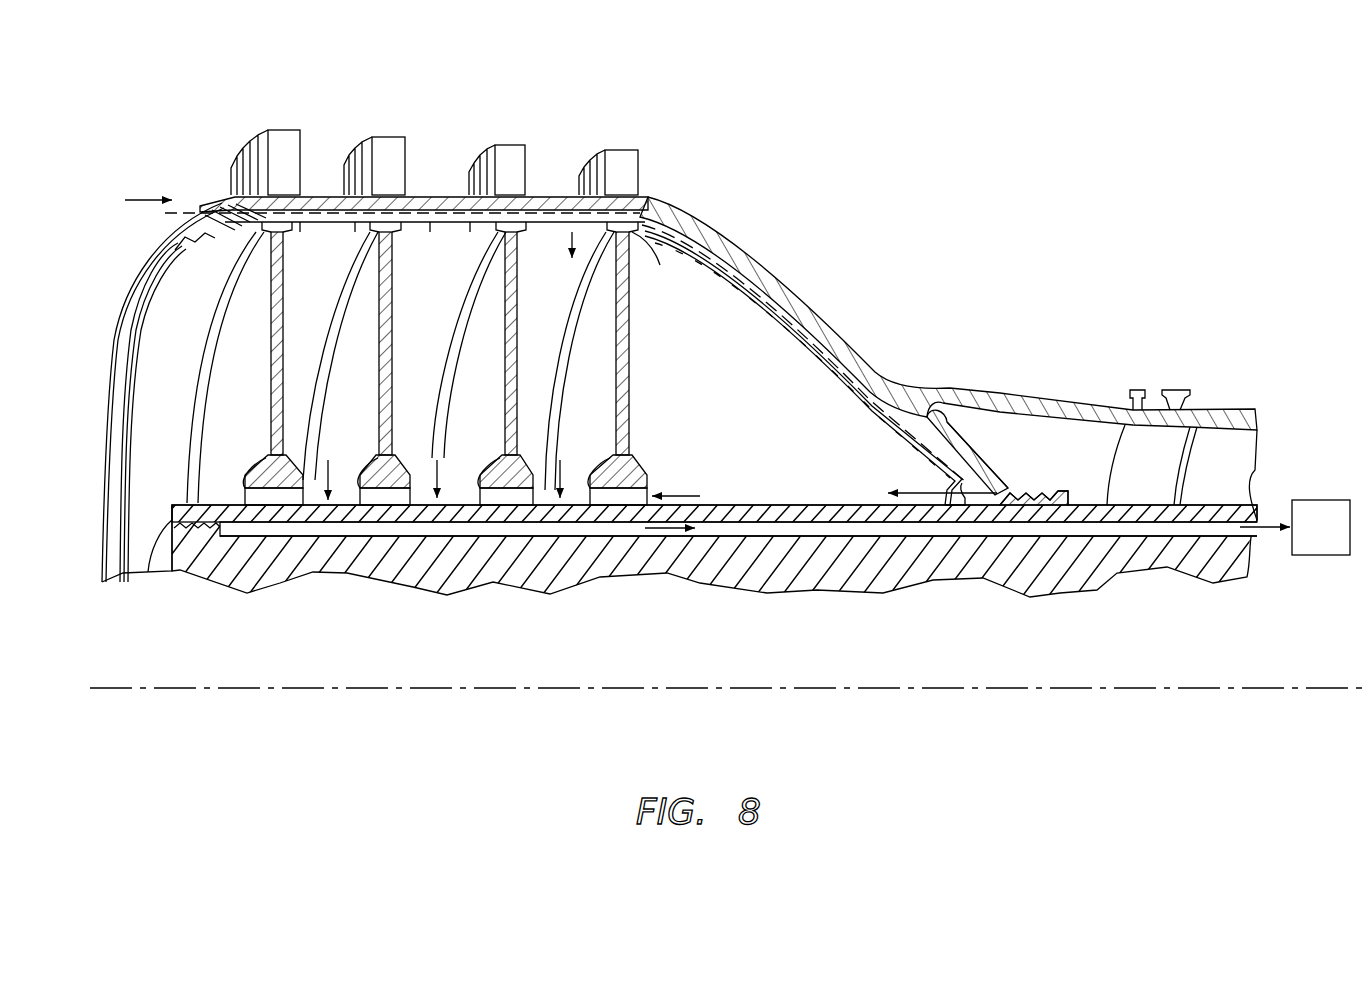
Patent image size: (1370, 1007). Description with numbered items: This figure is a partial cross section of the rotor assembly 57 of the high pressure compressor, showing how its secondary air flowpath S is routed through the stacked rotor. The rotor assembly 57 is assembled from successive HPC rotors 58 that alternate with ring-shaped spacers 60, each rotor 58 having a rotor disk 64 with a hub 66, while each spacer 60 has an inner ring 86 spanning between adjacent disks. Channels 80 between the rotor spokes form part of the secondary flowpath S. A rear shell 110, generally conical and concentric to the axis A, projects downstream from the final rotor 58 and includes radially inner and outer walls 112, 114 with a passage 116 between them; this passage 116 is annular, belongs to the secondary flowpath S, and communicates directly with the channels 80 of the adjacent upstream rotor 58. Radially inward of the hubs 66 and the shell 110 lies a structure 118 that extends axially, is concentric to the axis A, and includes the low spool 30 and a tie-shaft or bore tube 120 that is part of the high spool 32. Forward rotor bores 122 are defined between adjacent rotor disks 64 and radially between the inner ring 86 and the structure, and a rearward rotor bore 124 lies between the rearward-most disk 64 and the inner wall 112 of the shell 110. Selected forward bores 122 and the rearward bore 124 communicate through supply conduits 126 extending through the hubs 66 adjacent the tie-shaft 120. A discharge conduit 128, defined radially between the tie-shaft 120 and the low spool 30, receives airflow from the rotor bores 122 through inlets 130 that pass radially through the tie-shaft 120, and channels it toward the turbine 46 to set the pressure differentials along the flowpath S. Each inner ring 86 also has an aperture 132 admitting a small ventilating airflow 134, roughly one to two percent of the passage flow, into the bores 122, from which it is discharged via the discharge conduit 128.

The low spool 30 is at (760, 570).
The high spool 32 is at (1038, 527).
The low pressure turbine 46 is at (1330, 557).
The rotor assembly 57 is at (755, 145).
The HPC rotor 58 is at (627, 138).
The spacer 60 is at (553, 167).
The rotor disk 64 is at (634, 378).
The hub 66 is at (363, 477).
The channel 80 is at (647, 196).
The inner ring 86 is at (588, 235).
The rear shell 110 is at (802, 289).
The inner wall 112 is at (803, 342).
The outer wall 114 is at (828, 318).
The passage 116 is at (863, 358).
The structure 118 is at (293, 592).
The tie-shaft 120 is at (827, 522).
The forward rotor bore 122 is at (308, 328).
The rearward rotor bore 124 is at (859, 456).
The supply conduit 126 is at (520, 478).
The discharge conduit 128 is at (357, 536).
The inlet 130 is at (330, 525).
The aperture 132 is at (452, 260).
The ventilating airflow 134 is at (327, 262).
The secondary air flowpath S is at (150, 199).
The axis A is at (1228, 692).